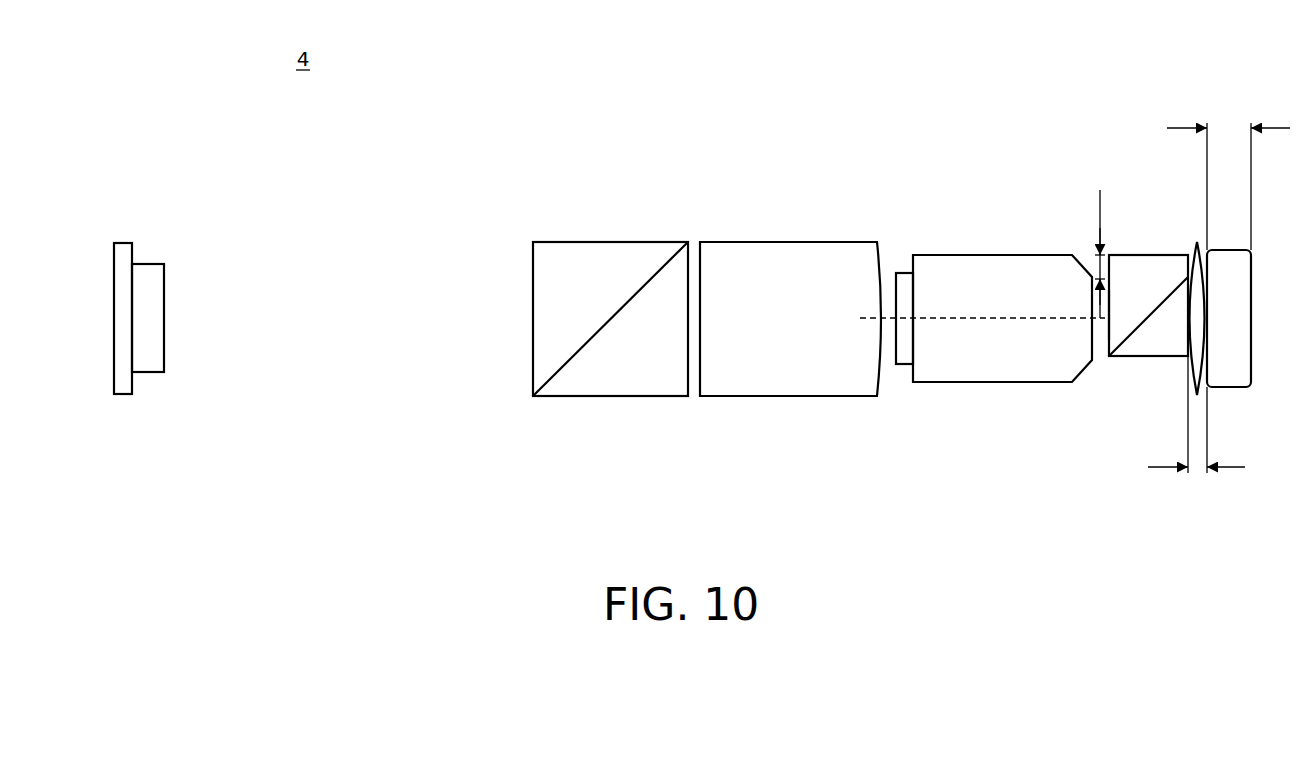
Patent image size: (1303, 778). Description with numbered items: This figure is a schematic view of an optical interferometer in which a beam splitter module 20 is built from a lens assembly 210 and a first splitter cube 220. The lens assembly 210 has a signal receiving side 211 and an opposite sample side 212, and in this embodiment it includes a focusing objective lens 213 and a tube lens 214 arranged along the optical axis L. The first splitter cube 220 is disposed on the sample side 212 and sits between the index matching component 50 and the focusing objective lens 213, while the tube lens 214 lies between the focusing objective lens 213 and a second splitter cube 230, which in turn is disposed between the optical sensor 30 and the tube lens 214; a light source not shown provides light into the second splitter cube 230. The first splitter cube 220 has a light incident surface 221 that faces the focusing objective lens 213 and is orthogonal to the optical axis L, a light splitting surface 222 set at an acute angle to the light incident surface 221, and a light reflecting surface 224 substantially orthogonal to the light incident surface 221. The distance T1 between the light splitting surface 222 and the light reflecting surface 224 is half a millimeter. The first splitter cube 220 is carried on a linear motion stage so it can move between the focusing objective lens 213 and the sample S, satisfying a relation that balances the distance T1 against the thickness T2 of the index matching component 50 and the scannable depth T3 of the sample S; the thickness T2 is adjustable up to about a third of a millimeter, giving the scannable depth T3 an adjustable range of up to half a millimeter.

The optical sensor 30 is at (149, 258).
The beam splitter module 20 is at (1118, 142).
The second splitter cube 230 is at (612, 241).
The lens assembly 210 is at (1060, 187).
The tube lens 214 is at (782, 258).
The signal receiving side 211 is at (892, 392).
The sample side 212 is at (1101, 377).
The focusing objective lens 213 is at (1040, 270).
The optical axis L is at (970, 318).
The distance between light splitting surface and light reflecting surface T1 is at (1086, 254).
The first splitter cube 220 is at (1143, 254).
The light incident surface 221 is at (1110, 313).
The light splitting surface 222 is at (1137, 323).
The light reflecting surface 224 is at (1167, 254).
The index matching component 50 is at (1197, 239).
The sample S is at (1233, 390).
The scannable depth T3 is at (1228, 171).
The thickness of index matching component T2 is at (1196, 429).